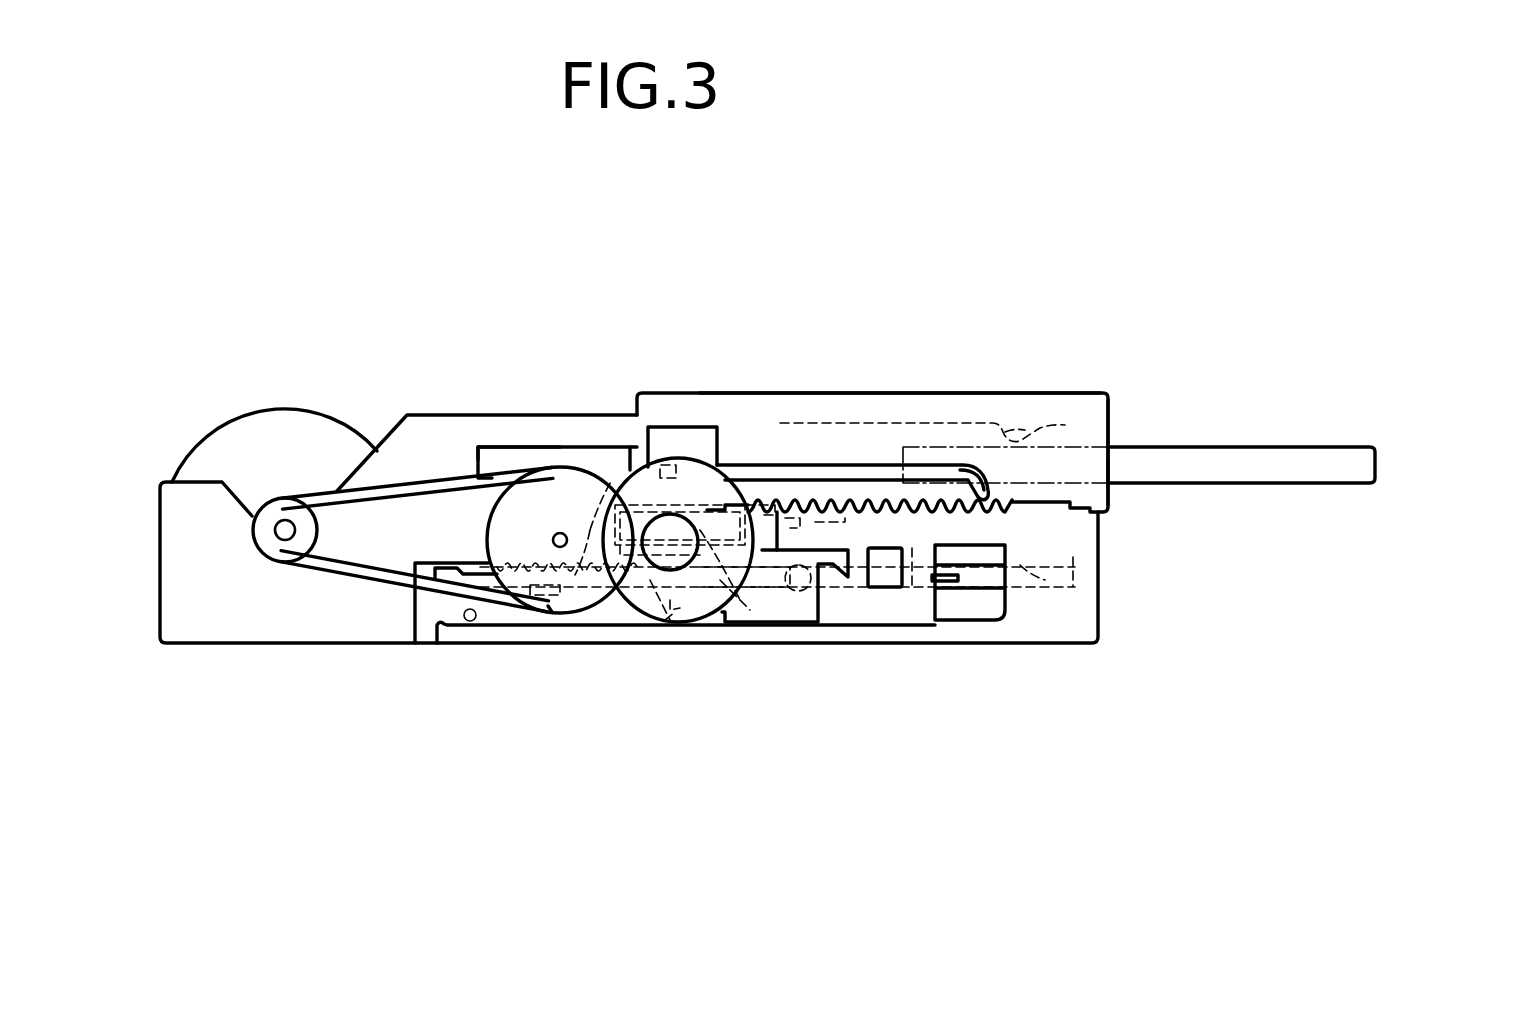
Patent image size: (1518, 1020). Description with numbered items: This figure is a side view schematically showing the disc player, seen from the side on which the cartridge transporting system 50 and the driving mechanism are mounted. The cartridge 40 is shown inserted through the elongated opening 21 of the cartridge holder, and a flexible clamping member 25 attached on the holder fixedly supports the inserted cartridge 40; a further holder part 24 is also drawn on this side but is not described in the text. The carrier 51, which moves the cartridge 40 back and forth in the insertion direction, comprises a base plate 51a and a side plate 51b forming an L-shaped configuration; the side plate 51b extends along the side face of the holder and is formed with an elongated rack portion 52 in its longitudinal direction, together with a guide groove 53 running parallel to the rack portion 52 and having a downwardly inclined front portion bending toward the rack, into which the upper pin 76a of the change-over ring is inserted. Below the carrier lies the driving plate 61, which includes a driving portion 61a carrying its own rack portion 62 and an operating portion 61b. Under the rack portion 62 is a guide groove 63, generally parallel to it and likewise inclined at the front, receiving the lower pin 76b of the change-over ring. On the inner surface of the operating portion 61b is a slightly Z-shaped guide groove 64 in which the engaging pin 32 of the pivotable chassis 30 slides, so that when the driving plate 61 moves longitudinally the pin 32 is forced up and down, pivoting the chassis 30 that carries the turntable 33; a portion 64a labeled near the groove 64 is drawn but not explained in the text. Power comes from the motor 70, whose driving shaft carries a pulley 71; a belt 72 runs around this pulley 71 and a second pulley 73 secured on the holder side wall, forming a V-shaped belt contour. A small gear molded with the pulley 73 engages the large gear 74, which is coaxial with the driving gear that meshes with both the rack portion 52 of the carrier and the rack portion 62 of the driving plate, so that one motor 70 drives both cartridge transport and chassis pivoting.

The elongated opening 21 is at (1110, 463).
The bracket 24 is at (552, 460).
The flexible clamping member 25 is at (1005, 430).
The pivotable chassis 30 is at (1078, 585).
The engaging pin 32 is at (817, 592).
The turntable 33 is at (838, 483).
The cartridge 40 is at (1362, 472).
The cartridge transporting system 50 is at (590, 376).
The carrier 51 is at (1088, 380).
The base plate 51a is at (913, 392).
The side plate 51b is at (1097, 410).
The elongated rack portion 52 is at (935, 500).
The guide groove 53 is at (808, 462).
The driving plate 61 is at (786, 614).
The driving portion 61a is at (471, 655).
The operating portion 61b is at (693, 500).
The rack portion 62 is at (590, 560).
The guide groove 63 is at (577, 600).
The guide groove 64 is at (722, 555).
The gear portion 64a is at (634, 455).
The motor 70 is at (262, 428).
The pulley 71 is at (265, 532).
The belt 72 is at (326, 572).
The pulley 73 is at (545, 605).
The large gear 74 is at (698, 607).
The upper pin 76a is at (668, 525).
The lower pin 76b is at (677, 610).